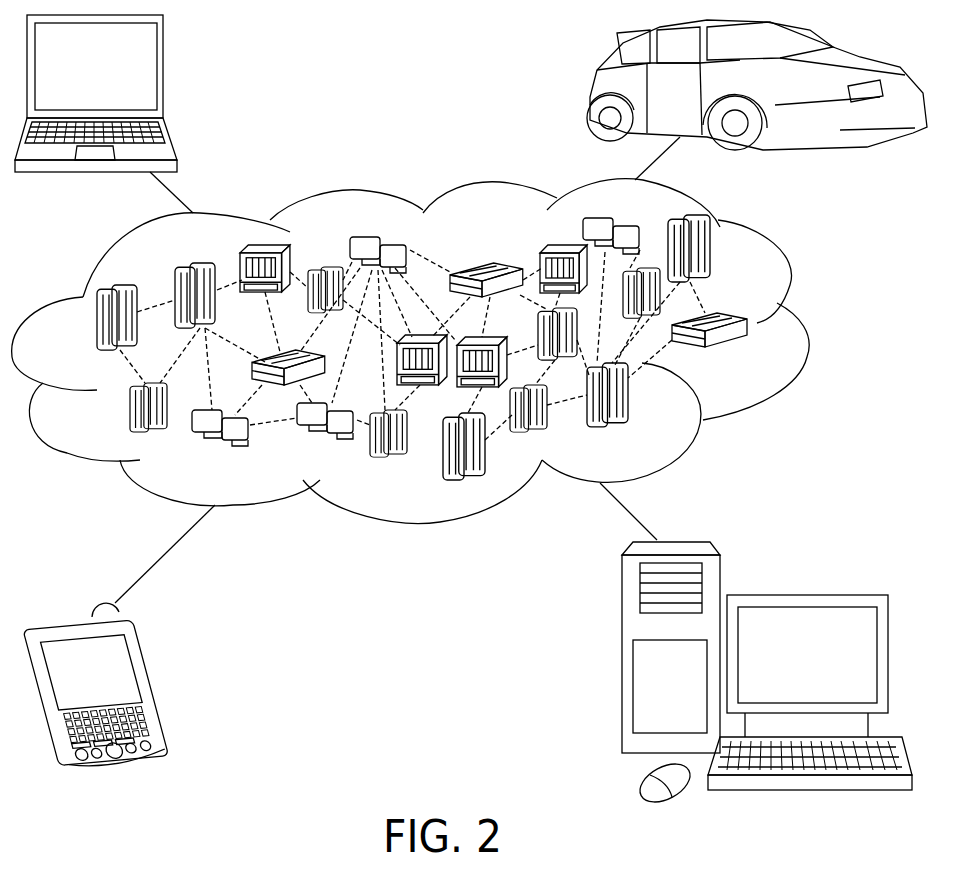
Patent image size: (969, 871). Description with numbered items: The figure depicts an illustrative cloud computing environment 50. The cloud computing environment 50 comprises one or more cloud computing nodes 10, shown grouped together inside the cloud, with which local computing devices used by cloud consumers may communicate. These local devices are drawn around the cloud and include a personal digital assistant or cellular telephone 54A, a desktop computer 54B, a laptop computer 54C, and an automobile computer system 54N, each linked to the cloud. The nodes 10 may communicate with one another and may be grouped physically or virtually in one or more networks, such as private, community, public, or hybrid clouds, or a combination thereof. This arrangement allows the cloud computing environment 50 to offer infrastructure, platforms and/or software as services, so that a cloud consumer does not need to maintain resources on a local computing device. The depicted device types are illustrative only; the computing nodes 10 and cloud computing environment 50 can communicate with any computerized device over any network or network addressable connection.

The cloud computing nodes 10 is at (766, 359).
The cloud computing environment 50 is at (805, 328).
The personal digital assistant or cellular telephone 54A is at (152, 683).
The desktop computer 54B is at (803, 596).
The laptop computer 54C is at (163, 72).
The automobile computer system 54N is at (595, 95).